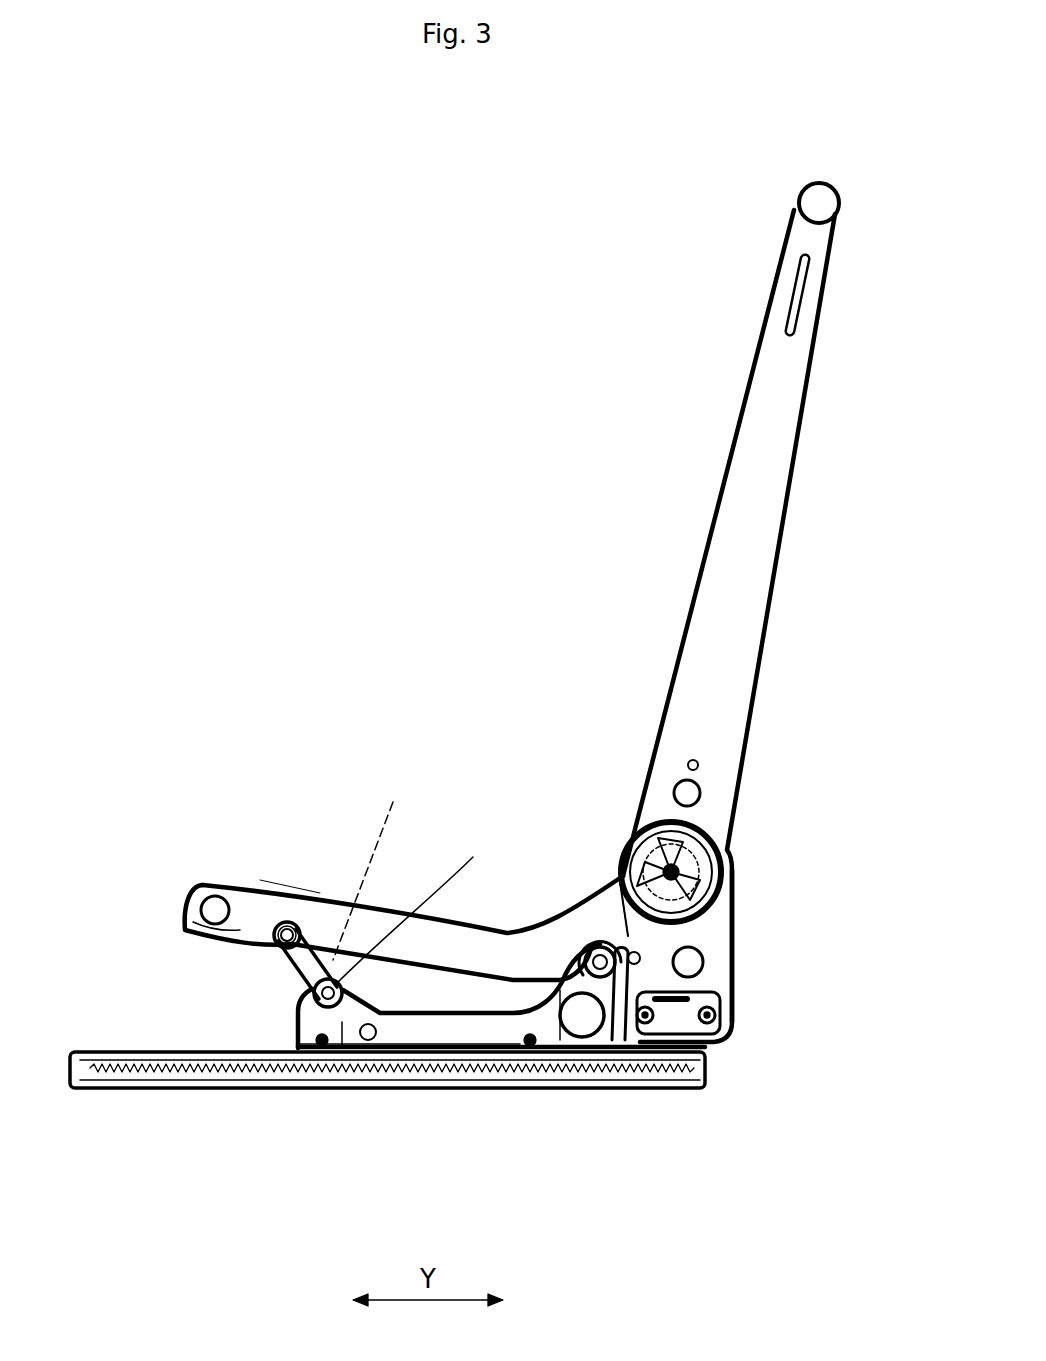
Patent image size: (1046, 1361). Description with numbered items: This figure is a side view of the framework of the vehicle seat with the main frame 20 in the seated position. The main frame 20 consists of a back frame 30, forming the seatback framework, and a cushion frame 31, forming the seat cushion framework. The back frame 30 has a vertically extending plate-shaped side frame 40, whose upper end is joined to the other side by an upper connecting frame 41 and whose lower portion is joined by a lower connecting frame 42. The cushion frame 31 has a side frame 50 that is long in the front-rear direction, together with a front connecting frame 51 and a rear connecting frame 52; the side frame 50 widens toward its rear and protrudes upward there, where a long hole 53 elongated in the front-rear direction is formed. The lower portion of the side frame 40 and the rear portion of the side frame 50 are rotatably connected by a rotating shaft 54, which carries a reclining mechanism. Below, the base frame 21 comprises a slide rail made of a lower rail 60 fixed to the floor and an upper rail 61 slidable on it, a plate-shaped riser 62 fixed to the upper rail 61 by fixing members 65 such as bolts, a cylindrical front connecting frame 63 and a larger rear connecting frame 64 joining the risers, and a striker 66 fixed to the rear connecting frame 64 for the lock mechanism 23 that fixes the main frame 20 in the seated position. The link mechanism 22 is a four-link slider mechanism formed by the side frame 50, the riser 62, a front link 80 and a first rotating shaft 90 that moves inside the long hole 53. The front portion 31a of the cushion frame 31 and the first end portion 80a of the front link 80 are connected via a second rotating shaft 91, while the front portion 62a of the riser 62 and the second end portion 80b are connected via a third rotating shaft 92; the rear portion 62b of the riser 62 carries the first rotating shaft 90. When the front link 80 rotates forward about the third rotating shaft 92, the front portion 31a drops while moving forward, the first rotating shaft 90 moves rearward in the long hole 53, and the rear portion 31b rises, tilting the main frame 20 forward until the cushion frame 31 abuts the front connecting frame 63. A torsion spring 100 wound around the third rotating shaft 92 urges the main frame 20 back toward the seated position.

The main frame 20 is at (773, 677).
The base frame 21 is at (592, 1098).
The link mechanism 22 is at (181, 983).
The lock mechanism 23 is at (733, 1047).
The back frame 30 is at (793, 502).
The cushion frame 31 is at (287, 893).
The front portion of the cushion frame 31a is at (190, 930).
The rear portion of the cushion frame 31b is at (623, 920).
The side frame 40 is at (723, 710).
The upper connecting frame 41 is at (822, 202).
The lower connecting frame 42 is at (683, 792).
The side frame 50 is at (377, 908).
The front connecting frame 51 is at (217, 882).
The rear connecting frame 52 is at (690, 962).
The long hole 53 is at (640, 953).
The rotating shaft 54 is at (732, 862).
The lower rail 60 is at (377, 1092).
The upper rail 61 is at (290, 1047).
The riser 62 is at (453, 1040).
The front portion of the riser 62a is at (340, 1025).
The rear portion of the riser 62b is at (633, 1040).
The front connecting frame 63 is at (400, 1040).
The rear connecting frame 64 is at (560, 1040).
The fixing member 65 is at (295, 1050).
The striker 66 is at (645, 1040).
The front link 80 is at (287, 970).
The first end portion of the front link 80a is at (305, 950).
The second end portion of the front link 80b is at (367, 992).
The first rotating shaft 90 is at (590, 945).
The second rotating shaft 91 is at (280, 927).
The third rotating shaft 92 is at (414, 906).
The torsion spring 100 is at (377, 866).